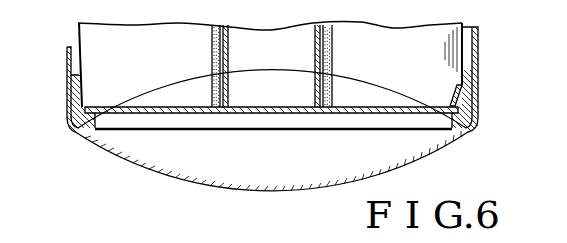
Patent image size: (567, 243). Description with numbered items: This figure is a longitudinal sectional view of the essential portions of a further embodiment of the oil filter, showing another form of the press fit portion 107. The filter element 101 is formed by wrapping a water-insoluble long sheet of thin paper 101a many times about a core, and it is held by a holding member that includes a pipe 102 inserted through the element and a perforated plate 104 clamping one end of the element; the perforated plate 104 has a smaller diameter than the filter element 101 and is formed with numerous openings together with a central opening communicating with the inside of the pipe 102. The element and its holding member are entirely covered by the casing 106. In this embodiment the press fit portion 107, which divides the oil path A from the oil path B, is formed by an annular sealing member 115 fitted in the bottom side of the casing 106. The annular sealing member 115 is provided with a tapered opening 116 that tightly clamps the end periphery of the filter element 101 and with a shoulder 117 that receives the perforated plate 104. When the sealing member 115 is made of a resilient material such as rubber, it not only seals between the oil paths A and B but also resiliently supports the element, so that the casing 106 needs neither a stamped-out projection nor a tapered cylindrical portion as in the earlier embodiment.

The filter element 101 is at (78, 30).
The thin paper sheet 101a is at (212, 62).
The pipe 102 is at (228, 60).
The perforated plate 104 is at (128, 115).
The casing 106 is at (67, 60).
The press fit portion 107 is at (68, 103).
The annular sealing member 115 is at (460, 137).
The tapered opening 116 is at (460, 86).
The shoulder 117 is at (452, 105).
The oil path A is at (467, 42).
The oil path B is at (284, 168).